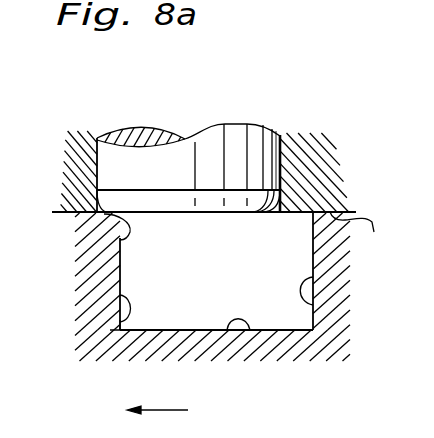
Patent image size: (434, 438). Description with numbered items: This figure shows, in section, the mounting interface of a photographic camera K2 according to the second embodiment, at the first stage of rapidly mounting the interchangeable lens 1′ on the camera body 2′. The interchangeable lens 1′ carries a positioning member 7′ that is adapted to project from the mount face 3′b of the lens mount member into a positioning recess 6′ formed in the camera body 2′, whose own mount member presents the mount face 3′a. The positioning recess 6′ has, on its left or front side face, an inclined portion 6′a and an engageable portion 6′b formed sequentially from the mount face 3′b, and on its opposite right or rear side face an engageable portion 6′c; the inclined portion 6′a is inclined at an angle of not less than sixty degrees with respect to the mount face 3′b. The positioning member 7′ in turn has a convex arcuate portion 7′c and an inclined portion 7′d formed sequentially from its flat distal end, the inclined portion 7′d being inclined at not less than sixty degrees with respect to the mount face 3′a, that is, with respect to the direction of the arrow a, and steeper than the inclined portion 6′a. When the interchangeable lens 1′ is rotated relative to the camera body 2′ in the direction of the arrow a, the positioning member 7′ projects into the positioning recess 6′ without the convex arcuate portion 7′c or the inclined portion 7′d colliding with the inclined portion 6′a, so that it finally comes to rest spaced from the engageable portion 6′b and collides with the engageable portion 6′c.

The interchangeable lens 1′ is at (81, 306).
The camera body 2′ is at (79, 130).
The photographic camera K2 is at (333, 129).
The positioning member 7′ is at (264, 126).
The inclined portion 7′d is at (95, 192).
The convex arcuate portion 7′c is at (120, 240).
The mount face 3′b is at (65, 216).
The mount face 3′a is at (364, 236).
The inclined portion 6′a is at (120, 240).
The engageable portion 6′b is at (116, 331).
The positioning recess 6′ is at (246, 331).
The engageable portion 6′c is at (306, 296).
The arrow a is at (152, 410).